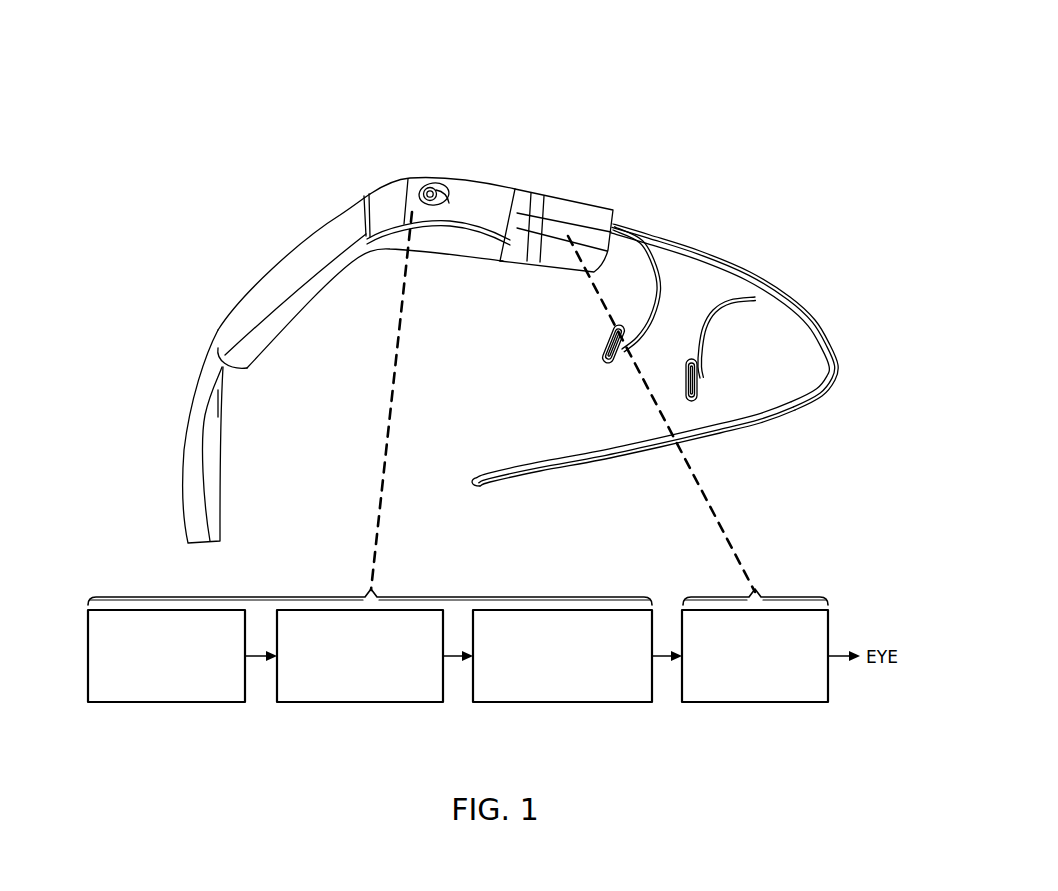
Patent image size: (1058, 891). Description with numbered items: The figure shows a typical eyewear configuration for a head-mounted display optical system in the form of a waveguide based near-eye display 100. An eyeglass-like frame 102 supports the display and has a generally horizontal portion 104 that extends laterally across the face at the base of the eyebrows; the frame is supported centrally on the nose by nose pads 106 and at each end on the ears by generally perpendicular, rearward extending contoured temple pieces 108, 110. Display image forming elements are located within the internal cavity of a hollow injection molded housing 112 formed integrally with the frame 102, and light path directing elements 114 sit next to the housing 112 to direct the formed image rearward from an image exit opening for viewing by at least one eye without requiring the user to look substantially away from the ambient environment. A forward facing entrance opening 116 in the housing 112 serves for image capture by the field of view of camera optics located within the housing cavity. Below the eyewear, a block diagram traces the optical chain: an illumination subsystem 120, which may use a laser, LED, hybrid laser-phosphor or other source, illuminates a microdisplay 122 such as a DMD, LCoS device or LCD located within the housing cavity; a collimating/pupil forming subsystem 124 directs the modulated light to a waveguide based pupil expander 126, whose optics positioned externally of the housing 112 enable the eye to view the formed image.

The waveguide based near-eye display (NED) 100 is at (628, 117).
The eyeglass-like frame 102 is at (759, 269).
The generally horizontal portion 104 is at (801, 310).
The nose pads 106 is at (603, 364).
The temple piece 108 is at (270, 258).
The temple piece 110 is at (731, 434).
The housing 112 is at (321, 303).
The light path directing elements 114 is at (573, 200).
The forward facing entrance opening 116 is at (460, 182).
The illumination subsystem 120 is at (167, 705).
The microdisplay 122 is at (360, 705).
The collimating/pupil forming subsystem 124 is at (563, 705).
The waveguide based pupil expander 126 is at (755, 705).